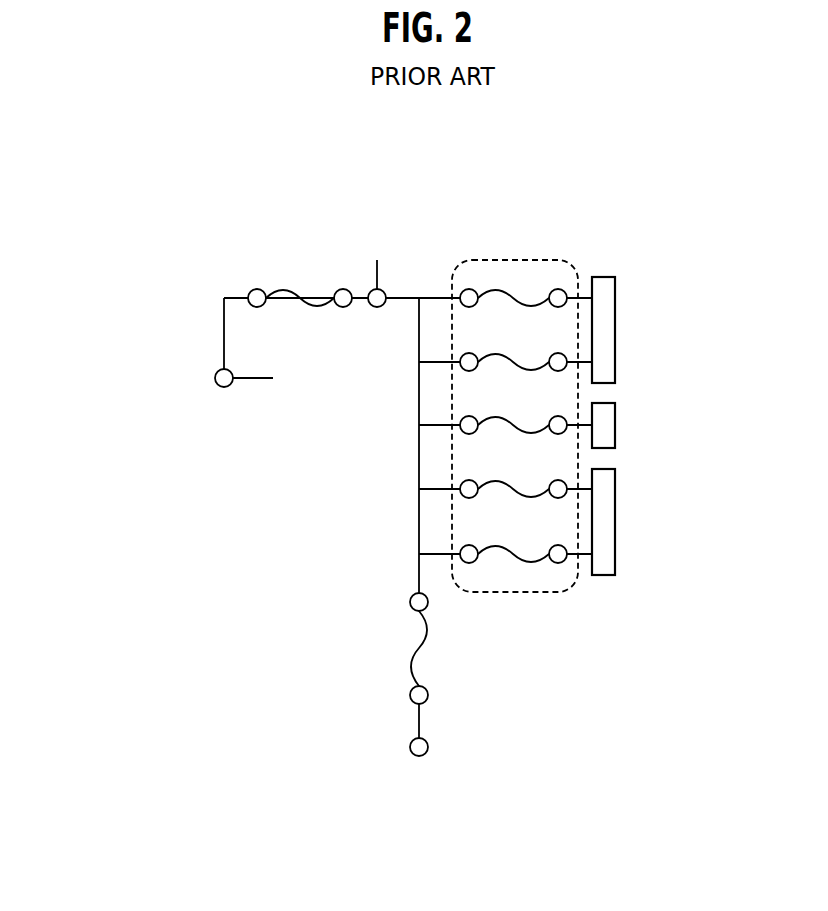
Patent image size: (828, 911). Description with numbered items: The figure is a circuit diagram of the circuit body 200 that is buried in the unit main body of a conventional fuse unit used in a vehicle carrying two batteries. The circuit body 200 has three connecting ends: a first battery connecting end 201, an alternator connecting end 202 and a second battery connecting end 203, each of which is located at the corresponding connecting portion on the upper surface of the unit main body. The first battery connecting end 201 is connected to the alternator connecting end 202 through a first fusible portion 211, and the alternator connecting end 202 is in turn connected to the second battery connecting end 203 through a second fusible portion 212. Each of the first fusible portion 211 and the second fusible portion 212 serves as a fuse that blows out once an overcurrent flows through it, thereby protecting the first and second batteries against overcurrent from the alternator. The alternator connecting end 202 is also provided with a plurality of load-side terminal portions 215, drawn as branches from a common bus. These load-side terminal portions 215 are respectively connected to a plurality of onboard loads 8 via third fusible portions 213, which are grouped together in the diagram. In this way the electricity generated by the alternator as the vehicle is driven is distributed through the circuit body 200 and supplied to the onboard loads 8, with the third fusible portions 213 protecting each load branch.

The circuit body 200 is at (126, 238).
The first battery connecting end 201 is at (221, 388).
The alternator connecting end 202 is at (377, 308).
The second battery connecting end 203 is at (410, 752).
The first fusible portion 211 is at (305, 293).
The second fusible portion 212 is at (413, 655).
The third fusible portions 213 is at (517, 297).
The load-side terminal portions 215 is at (419, 468).
The onboard loads 8 is at (605, 333).